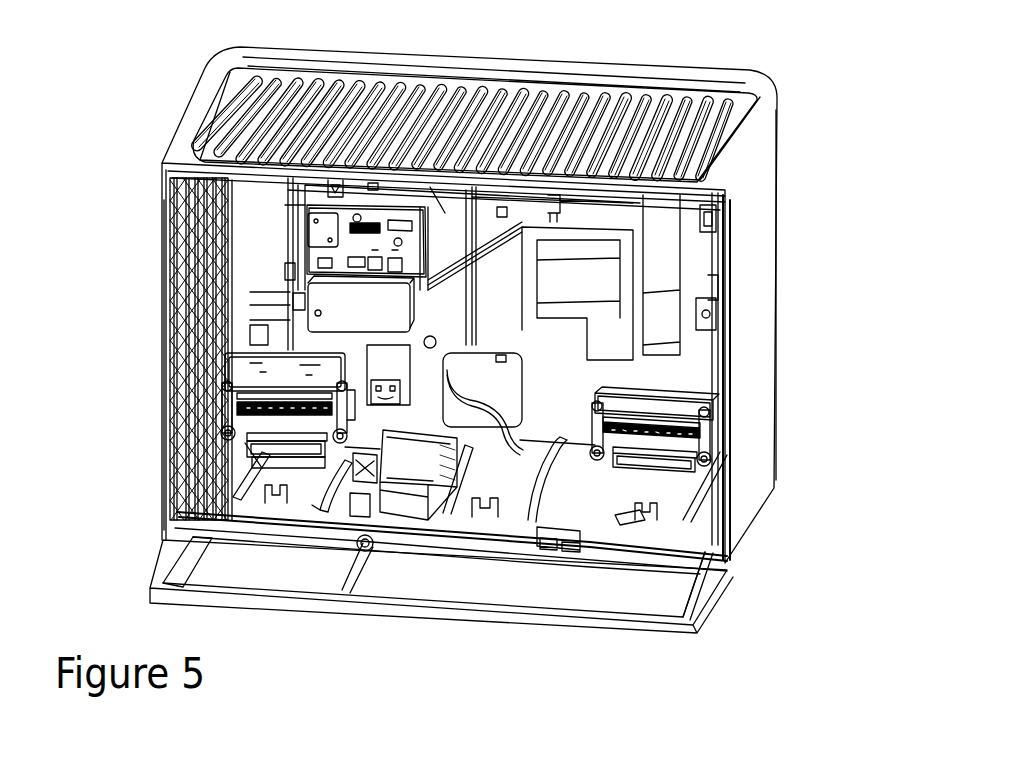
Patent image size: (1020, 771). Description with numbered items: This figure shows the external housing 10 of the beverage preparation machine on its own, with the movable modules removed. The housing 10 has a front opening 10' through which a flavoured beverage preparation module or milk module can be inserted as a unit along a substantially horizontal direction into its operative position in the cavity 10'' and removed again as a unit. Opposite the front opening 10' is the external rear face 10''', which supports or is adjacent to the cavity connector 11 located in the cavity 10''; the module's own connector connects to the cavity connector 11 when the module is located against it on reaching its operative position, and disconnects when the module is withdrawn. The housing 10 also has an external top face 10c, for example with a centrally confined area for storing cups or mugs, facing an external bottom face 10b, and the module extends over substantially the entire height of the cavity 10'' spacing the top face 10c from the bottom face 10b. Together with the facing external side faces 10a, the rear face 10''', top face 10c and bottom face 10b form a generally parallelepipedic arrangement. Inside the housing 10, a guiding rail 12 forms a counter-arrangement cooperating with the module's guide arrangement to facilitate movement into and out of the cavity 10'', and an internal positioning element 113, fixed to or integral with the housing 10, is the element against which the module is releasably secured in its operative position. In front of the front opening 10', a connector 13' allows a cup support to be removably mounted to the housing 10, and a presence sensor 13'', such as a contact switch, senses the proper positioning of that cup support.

The external housing 10 is at (465, 309).
The external top face 10c is at (588, 107).
The front opening 10' is at (163, 349).
The external side faces 10a is at (192, 270).
The external rear face 10''' is at (554, 311).
The cavity 10'' is at (745, 316).
The cavity connector 11 is at (305, 385).
The external bottom face 10b is at (523, 468).
The guiding rail 12 is at (230, 497).
The presence sensor 13'' is at (557, 561).
The internal positioning element 113 is at (638, 515).
The connector 13' is at (467, 584).